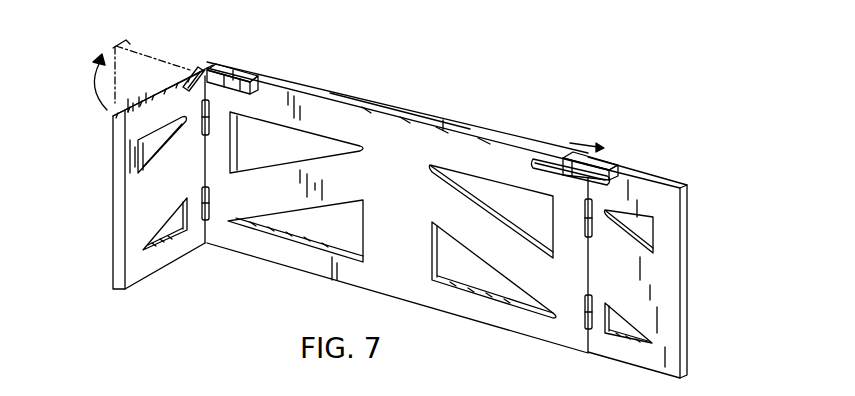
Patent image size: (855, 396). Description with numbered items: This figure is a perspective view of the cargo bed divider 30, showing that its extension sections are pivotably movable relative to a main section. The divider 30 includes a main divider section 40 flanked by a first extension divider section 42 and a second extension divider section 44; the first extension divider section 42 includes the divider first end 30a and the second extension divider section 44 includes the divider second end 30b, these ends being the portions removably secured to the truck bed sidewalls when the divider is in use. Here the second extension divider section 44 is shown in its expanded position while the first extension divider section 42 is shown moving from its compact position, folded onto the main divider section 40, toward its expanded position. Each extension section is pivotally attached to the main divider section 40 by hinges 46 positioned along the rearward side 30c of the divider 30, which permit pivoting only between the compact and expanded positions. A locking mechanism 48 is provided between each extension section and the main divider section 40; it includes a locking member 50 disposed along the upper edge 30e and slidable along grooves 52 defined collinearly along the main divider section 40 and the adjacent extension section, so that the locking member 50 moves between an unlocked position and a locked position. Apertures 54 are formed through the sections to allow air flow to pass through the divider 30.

The cargo bed divider 30 is at (413, 218).
The first end of the divider 30a is at (117, 230).
The second end of the divider 30b is at (683, 278).
The rearward side of the divider 30c is at (395, 270).
The upper edge of the divider 30e is at (497, 140).
The main divider section 40 is at (388, 120).
The first extension divider section 42 is at (146, 268).
The second extension divider section 44 is at (630, 356).
The hinges 46 is at (203, 123).
The locking mechanism 48 is at (415, 94).
The locking member 50 is at (228, 66).
The grooves 52 is at (198, 70).
The apertures 54 is at (148, 150).